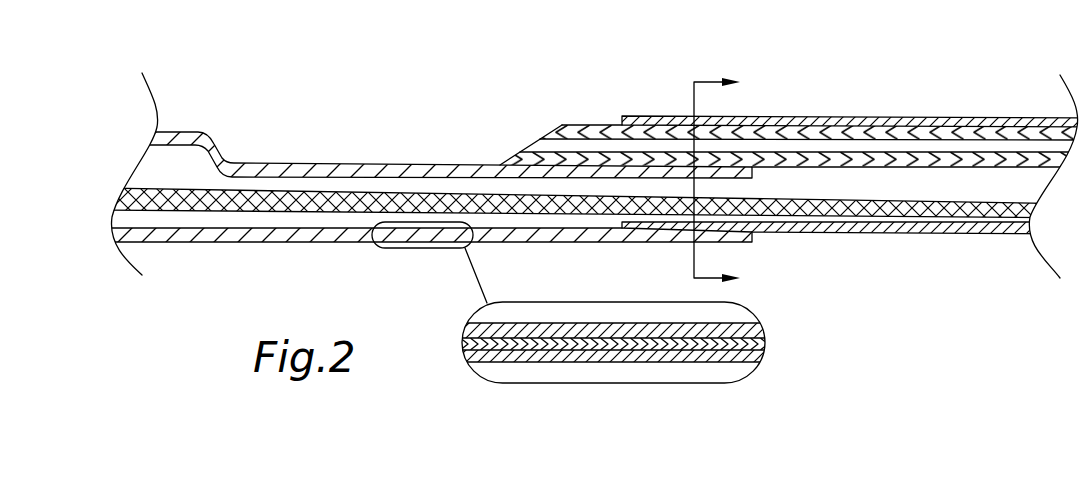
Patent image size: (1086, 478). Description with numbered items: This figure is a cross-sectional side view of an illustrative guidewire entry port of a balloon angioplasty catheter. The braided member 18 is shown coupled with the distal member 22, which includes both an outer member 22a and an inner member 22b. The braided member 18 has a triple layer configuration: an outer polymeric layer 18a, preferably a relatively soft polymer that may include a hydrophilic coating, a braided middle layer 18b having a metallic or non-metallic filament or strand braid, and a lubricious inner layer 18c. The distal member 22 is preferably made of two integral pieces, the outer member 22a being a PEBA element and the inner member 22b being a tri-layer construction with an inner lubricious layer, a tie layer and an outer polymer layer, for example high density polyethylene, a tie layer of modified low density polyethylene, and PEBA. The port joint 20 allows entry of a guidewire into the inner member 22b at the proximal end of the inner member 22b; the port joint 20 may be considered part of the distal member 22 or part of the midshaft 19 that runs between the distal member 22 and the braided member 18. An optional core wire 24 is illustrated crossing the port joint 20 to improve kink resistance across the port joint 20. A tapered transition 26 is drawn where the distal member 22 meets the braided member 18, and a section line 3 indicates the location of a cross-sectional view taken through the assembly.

The midshaft 19 is at (384, 60).
The port joint 20 is at (399, 124).
The braided member 18 is at (295, 242).
The outer polymeric layer 18a is at (552, 335).
The braided middle layer 18b is at (642, 343).
The lubricious inner layer 18c is at (685, 355).
The distal member 22 is at (850, 249).
The outer member 22a is at (660, 117).
The inner member 22b is at (603, 133).
The core wire 24 is at (133, 177).
The tapered transition 26 is at (537, 147).
The section line 3- 3 is at (728, 183).